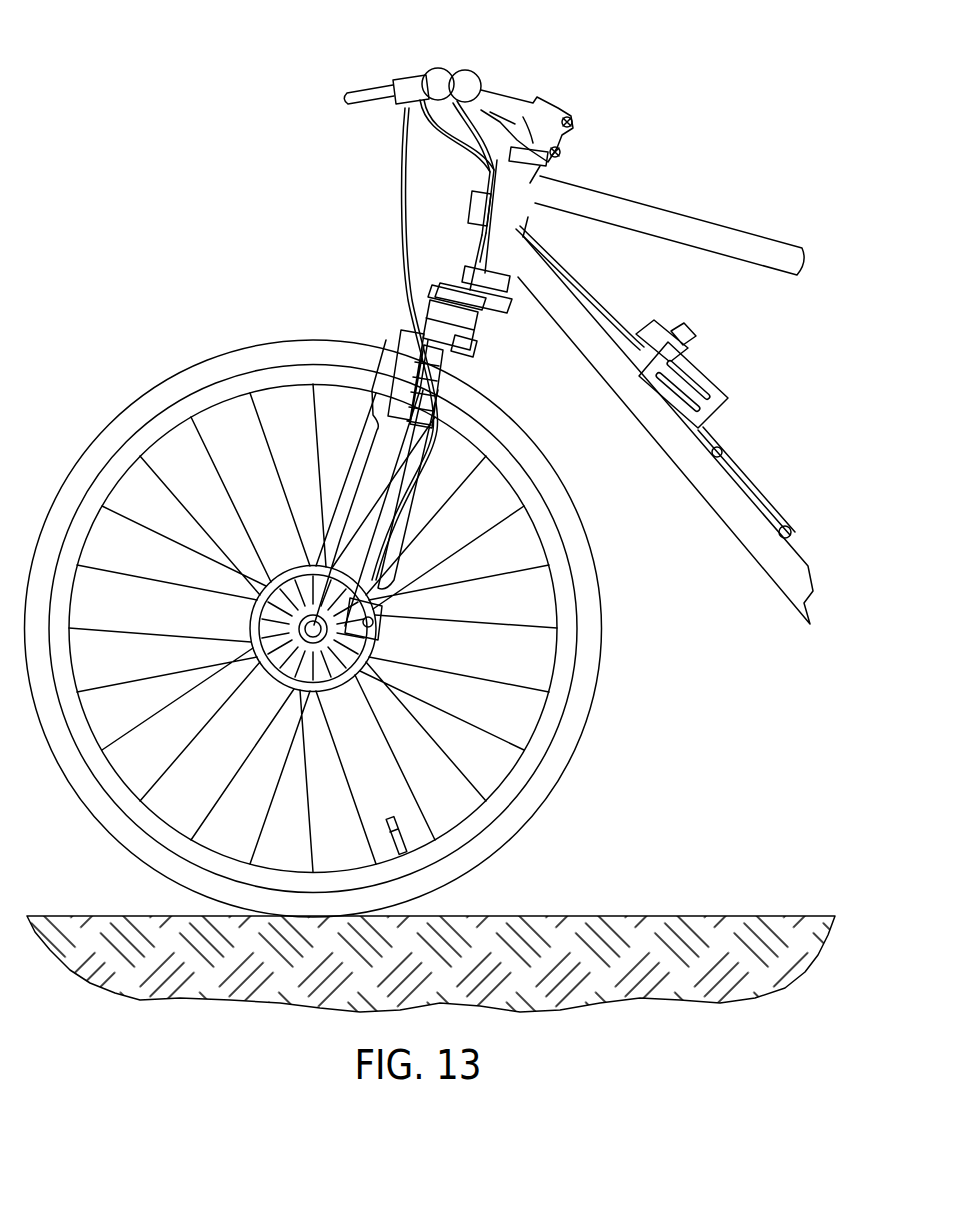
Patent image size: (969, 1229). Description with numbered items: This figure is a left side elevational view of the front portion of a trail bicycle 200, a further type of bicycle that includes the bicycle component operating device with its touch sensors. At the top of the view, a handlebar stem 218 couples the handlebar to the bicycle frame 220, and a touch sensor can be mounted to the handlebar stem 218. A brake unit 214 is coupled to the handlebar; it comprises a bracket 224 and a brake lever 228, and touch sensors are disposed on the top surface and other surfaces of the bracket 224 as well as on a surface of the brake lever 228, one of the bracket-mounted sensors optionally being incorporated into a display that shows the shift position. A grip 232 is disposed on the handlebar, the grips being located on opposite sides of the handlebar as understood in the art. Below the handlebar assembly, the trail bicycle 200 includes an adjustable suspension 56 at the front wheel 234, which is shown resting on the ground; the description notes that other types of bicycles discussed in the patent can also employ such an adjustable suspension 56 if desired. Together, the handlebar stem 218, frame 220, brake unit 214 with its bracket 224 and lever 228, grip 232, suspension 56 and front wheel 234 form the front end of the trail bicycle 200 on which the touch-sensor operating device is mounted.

The trail bicycle 200 is at (645, 160).
The brake unit 214 is at (361, 83).
The handlebar stem 218 is at (513, 100).
The bicycle frame 220 is at (718, 226).
The bracket 224 is at (388, 78).
The brake lever 228 is at (358, 106).
The grip 232 is at (446, 68).
The adjustable suspension 56 is at (430, 286).
The front wheel 234 is at (392, 332).